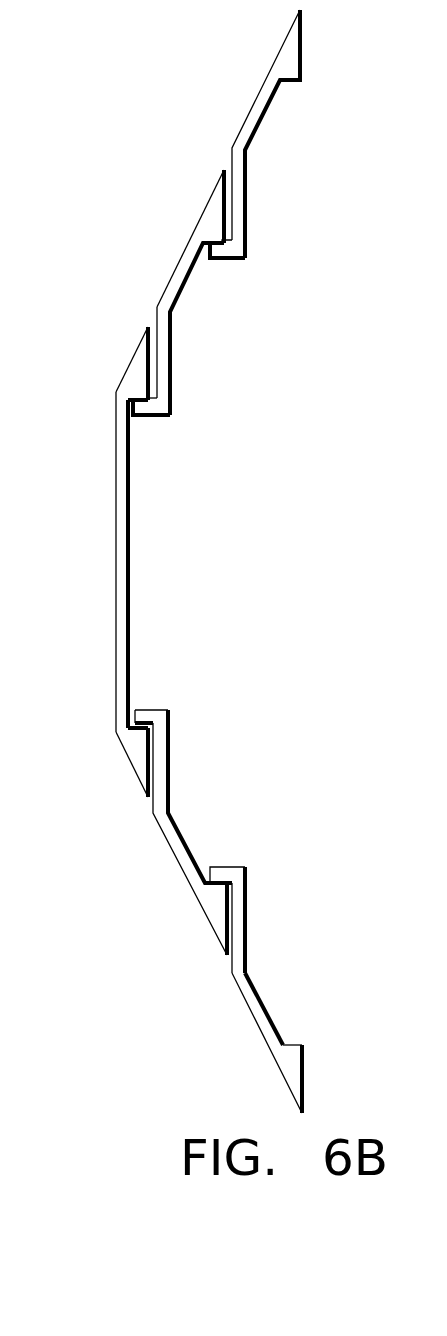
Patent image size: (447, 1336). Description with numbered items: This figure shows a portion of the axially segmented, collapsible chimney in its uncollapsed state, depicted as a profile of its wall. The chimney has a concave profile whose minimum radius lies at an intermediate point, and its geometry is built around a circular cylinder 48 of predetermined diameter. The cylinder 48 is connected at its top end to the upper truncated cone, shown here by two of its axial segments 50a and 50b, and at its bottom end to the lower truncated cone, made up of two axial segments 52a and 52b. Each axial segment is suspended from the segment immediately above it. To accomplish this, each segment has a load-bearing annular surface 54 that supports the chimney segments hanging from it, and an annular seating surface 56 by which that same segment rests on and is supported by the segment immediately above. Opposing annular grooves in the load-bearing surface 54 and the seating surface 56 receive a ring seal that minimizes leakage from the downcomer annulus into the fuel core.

The circular cylinder 48 is at (115, 530).
The axial segment 50a is at (173, 265).
The axial segment 50b is at (278, 55).
The axial segment 52a is at (202, 913).
The axial segment 52b is at (280, 1070).
The load-bearing annular surface 54 is at (219, 259).
The annular seating surface 56 is at (212, 237).